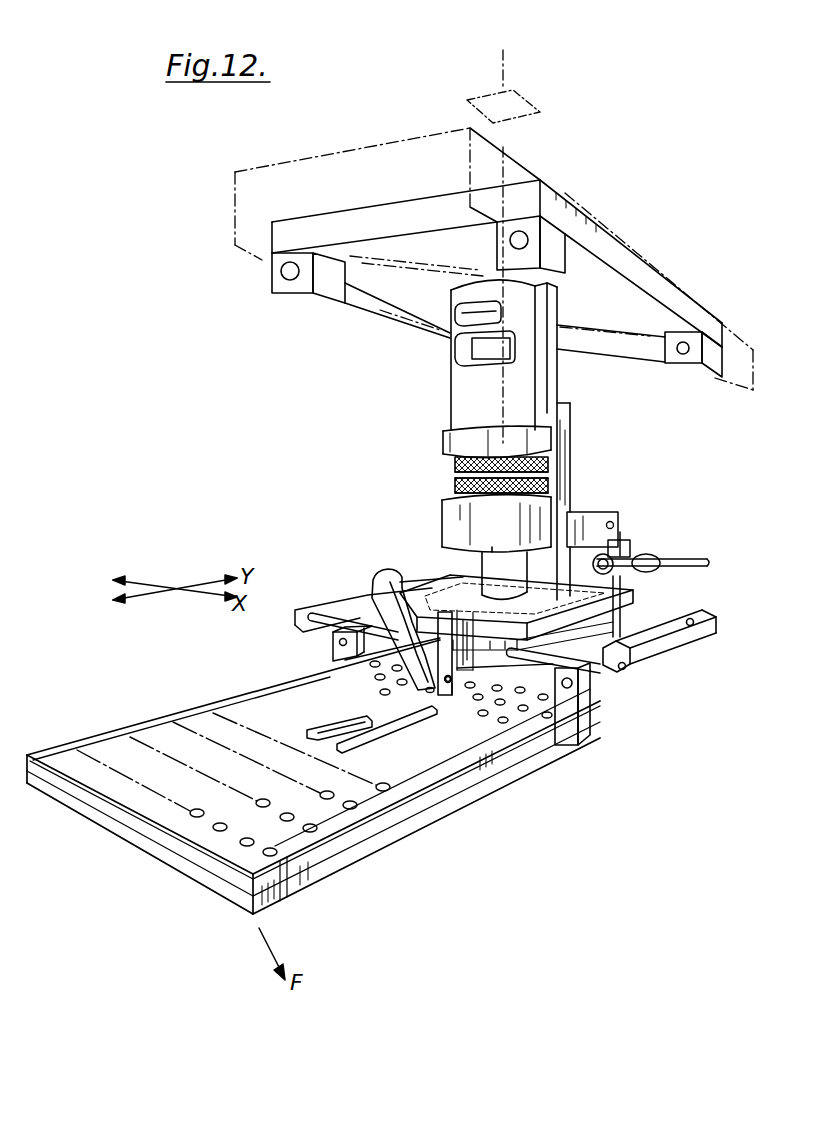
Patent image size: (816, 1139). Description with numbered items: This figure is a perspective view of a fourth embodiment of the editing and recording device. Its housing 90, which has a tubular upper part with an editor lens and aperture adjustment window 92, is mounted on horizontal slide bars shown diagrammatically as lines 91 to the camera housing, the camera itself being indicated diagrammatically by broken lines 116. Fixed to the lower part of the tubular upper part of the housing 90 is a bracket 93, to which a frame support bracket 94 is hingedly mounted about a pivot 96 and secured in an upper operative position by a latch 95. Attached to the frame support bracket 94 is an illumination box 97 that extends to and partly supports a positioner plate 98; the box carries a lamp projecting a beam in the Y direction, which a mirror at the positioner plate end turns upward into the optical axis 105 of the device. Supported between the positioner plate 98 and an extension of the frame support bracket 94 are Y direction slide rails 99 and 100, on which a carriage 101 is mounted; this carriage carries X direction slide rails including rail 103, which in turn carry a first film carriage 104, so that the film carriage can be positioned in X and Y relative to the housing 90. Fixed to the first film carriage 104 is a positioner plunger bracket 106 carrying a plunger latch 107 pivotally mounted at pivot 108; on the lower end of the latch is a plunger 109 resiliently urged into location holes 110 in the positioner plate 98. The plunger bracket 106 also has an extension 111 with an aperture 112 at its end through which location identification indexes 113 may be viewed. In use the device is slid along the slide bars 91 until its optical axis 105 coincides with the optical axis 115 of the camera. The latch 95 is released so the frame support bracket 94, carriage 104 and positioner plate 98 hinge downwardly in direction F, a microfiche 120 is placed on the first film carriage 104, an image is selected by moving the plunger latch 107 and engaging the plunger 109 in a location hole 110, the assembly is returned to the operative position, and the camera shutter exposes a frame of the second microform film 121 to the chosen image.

The housing 90 is at (548, 378).
The horizontal slide bars 91 is at (262, 258).
The editor lens and aperture adjustment window 92 is at (460, 334).
The bracket 93 is at (594, 518).
The frame support bracket 94 is at (645, 538).
The latch 95 is at (686, 566).
The pivot 96 is at (615, 519).
The illumination box 97 is at (600, 645).
The positioner plate 98 is at (427, 770).
The slide rail 99 is at (333, 643).
The slide rail 100 is at (570, 685).
The carriage 101 is at (670, 665).
The X direction slide rail 103 is at (325, 615).
The first film carriage 104 is at (428, 588).
The optical axis 105 is at (505, 168).
The positioner plunger bracket 106 is at (452, 684).
The plunger latch 107 is at (390, 568).
The pivot 108 is at (449, 679).
The plunger 109 is at (433, 690).
The location holes 110 is at (378, 680).
The extension 111 is at (404, 709).
The aperture 112 is at (306, 730).
The location identification indexes 113 is at (350, 807).
The optical axis of the camera 115 is at (507, 80).
The broken lines 116 is at (376, 145).
The microfiche 120 is at (625, 588).
The second microform film 121 is at (545, 123).